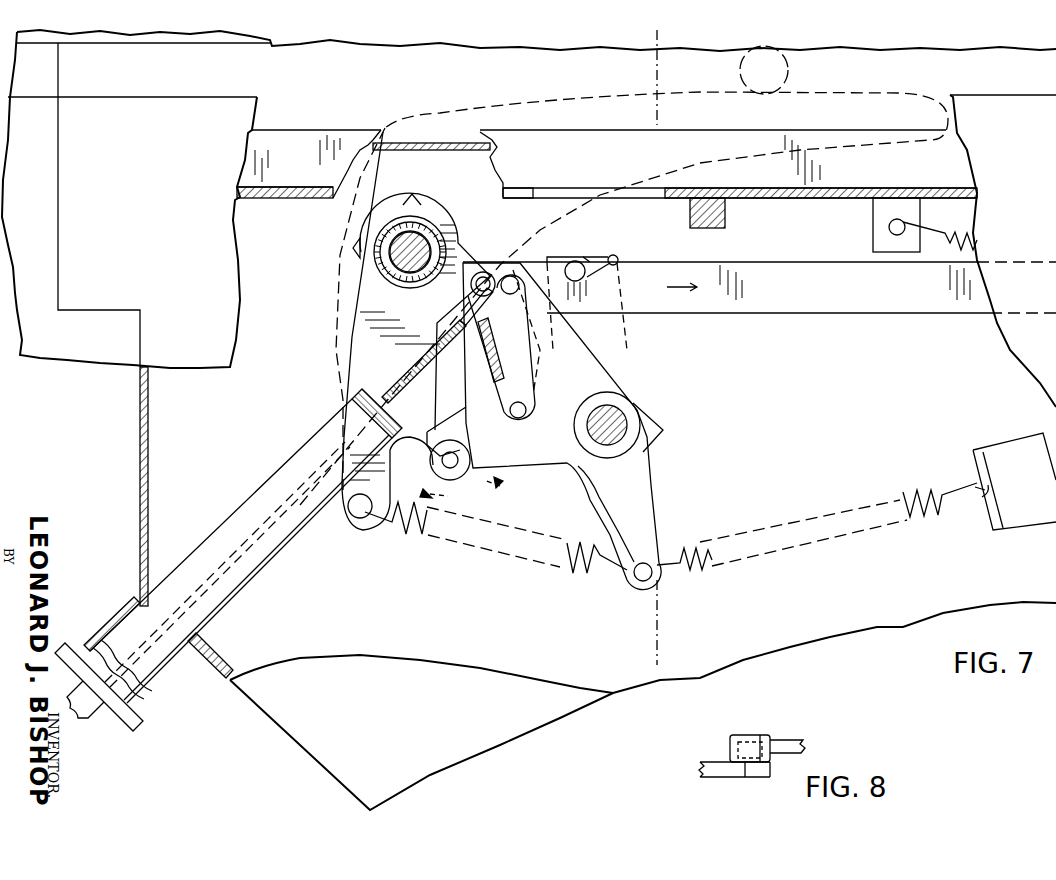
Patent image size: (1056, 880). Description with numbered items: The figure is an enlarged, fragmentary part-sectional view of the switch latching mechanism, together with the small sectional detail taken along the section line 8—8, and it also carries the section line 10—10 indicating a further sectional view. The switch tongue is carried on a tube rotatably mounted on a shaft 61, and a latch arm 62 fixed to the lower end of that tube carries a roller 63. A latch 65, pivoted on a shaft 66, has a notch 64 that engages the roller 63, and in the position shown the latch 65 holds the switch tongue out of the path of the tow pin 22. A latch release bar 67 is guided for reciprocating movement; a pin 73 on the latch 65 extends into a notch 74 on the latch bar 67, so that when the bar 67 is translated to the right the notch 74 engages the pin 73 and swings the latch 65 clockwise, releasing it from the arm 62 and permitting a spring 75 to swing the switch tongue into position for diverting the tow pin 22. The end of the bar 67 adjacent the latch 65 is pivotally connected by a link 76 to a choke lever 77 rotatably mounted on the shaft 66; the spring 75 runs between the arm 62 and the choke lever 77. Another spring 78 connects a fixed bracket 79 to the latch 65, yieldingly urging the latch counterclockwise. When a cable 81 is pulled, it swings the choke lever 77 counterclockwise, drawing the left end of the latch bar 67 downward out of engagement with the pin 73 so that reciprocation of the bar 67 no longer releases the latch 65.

In FIG. 7, the section line 8— 8 is at (464, 481).
In FIG. 7, the section line 10— 10 is at (657, 665).
In FIG. 7, the tow pin 22 is at (772, 50).
In FIG. 7, the shaft 61 is at (392, 263).
In FIG. 7, the latch arm 62 is at (368, 330).
In FIG. 8, the latch arm 62 is at (713, 780).
In FIG. 7, the roller 63 is at (447, 480).
In FIG. 8, the roller 63 is at (753, 735).
In FIG. 7, the notch 64 is at (455, 432).
In FIG. 7, the latch 65 is at (627, 367).
In FIG. 8, the latch 65 is at (795, 740).
In FIG. 7, the shaft 66 is at (620, 427).
In FIG. 7, the latch release bar 67 is at (853, 315).
In FIG. 7, the pin 73 is at (578, 265).
In FIG. 7, the notch 74 is at (612, 256).
In FIG. 7, the spring 75 is at (560, 567).
In FIG. 7, the link 76 is at (490, 345).
In FIG. 7, the choke lever 77 is at (637, 483).
In FIG. 7, the spring 78 is at (795, 543).
In FIG. 7, the fixed bracket 79 is at (983, 523).
In FIG. 7, the cable 81 is at (92, 727).